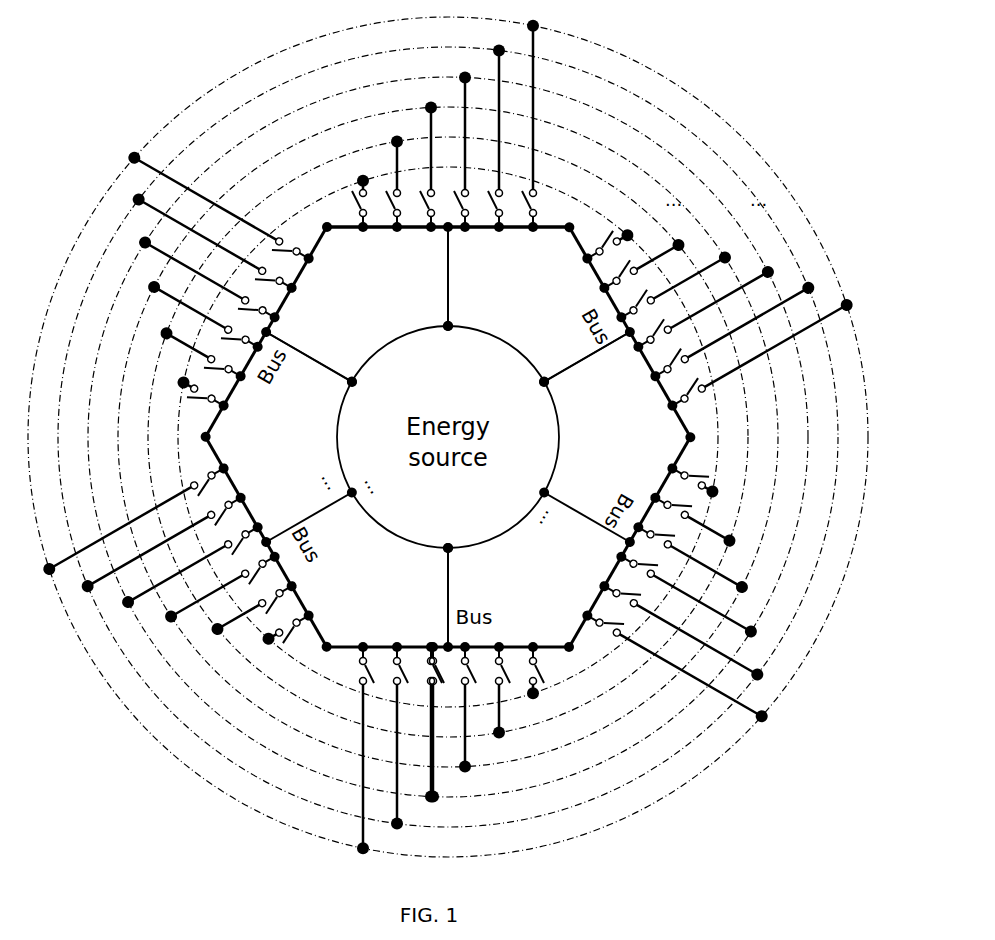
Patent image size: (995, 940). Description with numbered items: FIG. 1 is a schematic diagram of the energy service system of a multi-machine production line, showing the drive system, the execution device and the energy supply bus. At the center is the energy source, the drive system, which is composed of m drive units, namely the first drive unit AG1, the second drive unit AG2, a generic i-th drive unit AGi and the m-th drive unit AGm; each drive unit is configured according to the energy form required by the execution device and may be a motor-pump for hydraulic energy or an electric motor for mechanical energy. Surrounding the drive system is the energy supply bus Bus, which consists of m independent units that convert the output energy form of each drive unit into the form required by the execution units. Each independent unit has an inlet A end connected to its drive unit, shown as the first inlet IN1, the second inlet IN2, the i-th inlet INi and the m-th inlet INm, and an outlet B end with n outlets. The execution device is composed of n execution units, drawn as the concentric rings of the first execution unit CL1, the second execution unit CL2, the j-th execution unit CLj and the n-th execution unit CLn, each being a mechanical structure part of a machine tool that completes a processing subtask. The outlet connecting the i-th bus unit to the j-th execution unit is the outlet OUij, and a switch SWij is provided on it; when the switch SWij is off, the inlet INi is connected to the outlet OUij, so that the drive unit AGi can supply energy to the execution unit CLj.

The first execution unit CL1 is at (448, 437).
The second execution unit CL2 is at (448, 437).
The j-th execution unit CLj is at (448, 437).
The n-th execution unit CLn is at (448, 437).
The first inlet A end IN1 is at (465, 276).
The second inlet A end IN2 is at (587, 369).
The i-th inlet A end INi is at (424, 597).
The m-th inlet A end INm is at (309, 353).
The first drive unit AG1 is at (444, 347).
The second drive unit AG2 is at (525, 400).
The i-th drive unit AGi is at (444, 532).
The m-th drive unit AGm is at (370, 400).
The switch SWij is at (437, 683).
The outlet OUij is at (450, 759).
The energy supply bus Bus is at (448, 249).